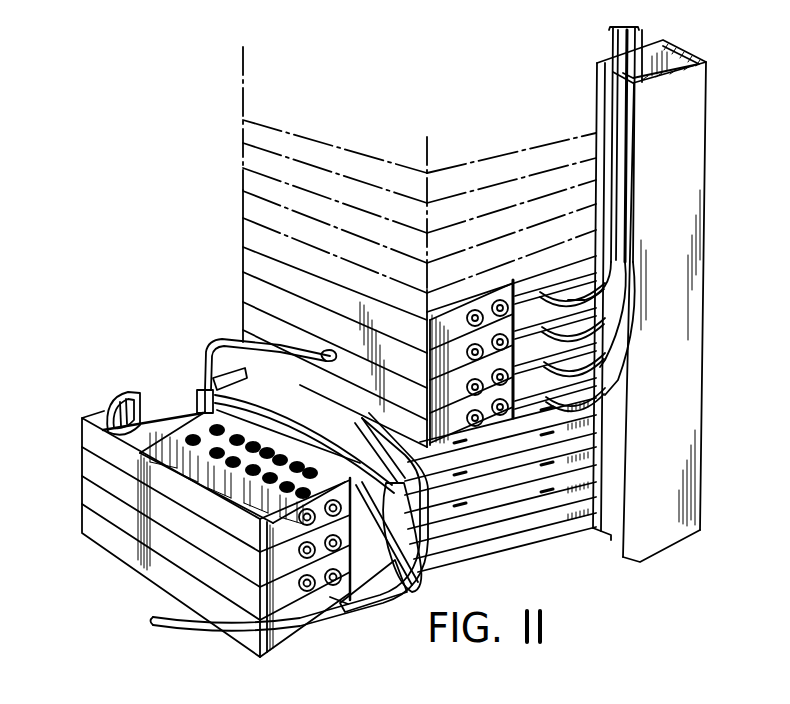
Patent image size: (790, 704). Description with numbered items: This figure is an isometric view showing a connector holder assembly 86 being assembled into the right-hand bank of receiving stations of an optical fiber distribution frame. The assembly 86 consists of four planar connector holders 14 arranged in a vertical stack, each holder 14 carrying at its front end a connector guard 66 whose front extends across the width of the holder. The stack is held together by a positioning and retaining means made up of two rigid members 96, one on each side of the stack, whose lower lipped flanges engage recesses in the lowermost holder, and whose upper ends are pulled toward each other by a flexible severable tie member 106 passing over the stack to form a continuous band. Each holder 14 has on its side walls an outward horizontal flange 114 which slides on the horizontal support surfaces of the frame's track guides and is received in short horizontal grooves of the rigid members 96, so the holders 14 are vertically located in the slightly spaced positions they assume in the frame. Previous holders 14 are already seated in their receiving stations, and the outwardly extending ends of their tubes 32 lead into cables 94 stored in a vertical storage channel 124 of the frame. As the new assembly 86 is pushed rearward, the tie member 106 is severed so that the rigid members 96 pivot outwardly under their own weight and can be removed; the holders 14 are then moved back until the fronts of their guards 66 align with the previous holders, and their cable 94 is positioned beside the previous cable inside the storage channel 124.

The connector holder 14 is at (262, 182).
The tube 32 is at (628, 300).
The connector guard 66 is at (158, 541).
The connector holder assembly 86 is at (89, 396).
The cable 94 is at (612, 52).
The rigid member 96 is at (202, 394).
The flexible severable tie member 106 is at (236, 344).
The horizontal flange 114 is at (520, 510).
The vertical storage channel 124 is at (615, 463).